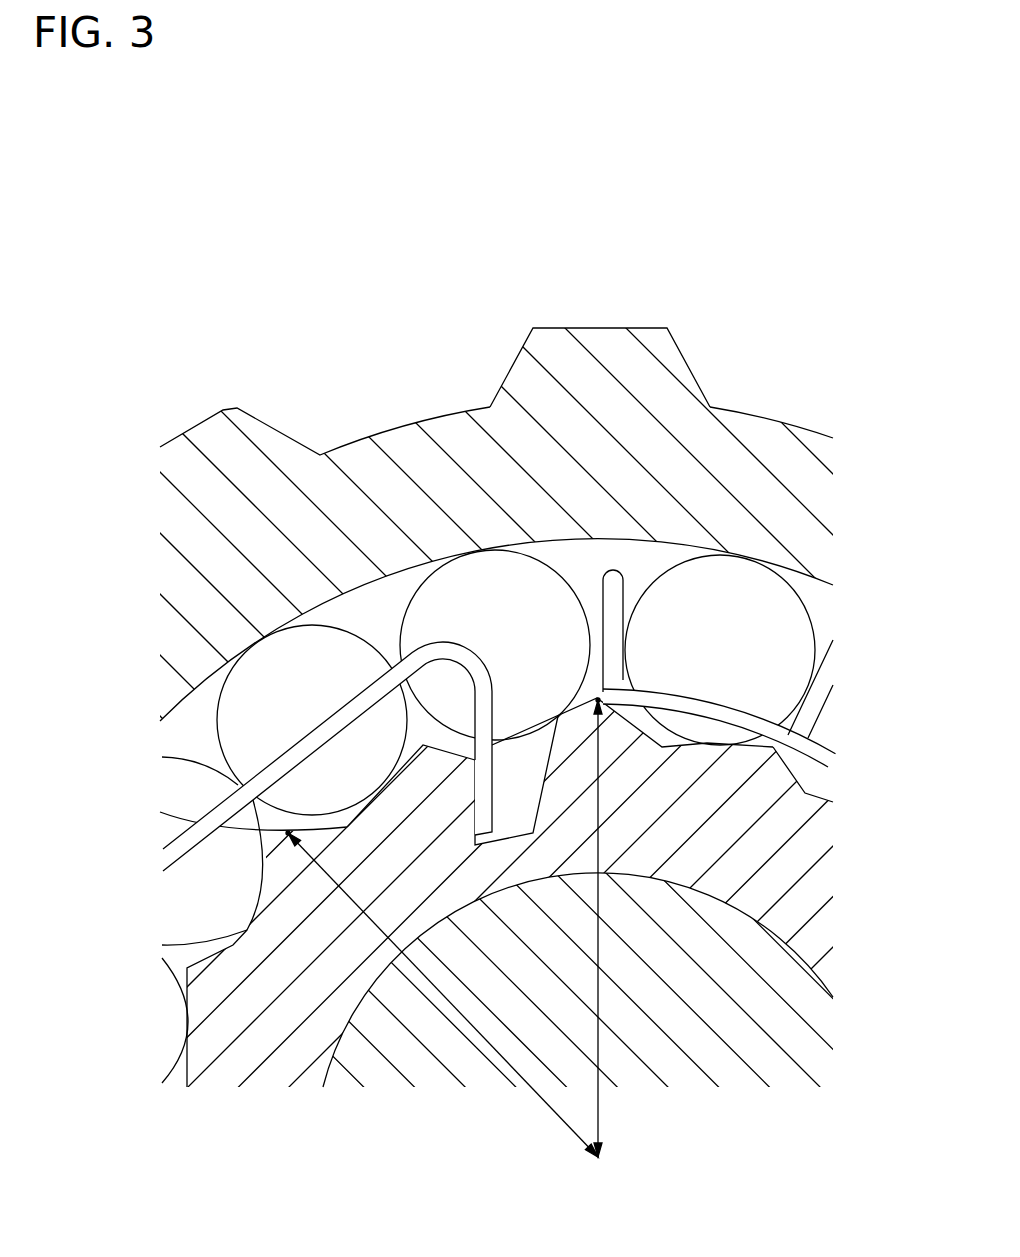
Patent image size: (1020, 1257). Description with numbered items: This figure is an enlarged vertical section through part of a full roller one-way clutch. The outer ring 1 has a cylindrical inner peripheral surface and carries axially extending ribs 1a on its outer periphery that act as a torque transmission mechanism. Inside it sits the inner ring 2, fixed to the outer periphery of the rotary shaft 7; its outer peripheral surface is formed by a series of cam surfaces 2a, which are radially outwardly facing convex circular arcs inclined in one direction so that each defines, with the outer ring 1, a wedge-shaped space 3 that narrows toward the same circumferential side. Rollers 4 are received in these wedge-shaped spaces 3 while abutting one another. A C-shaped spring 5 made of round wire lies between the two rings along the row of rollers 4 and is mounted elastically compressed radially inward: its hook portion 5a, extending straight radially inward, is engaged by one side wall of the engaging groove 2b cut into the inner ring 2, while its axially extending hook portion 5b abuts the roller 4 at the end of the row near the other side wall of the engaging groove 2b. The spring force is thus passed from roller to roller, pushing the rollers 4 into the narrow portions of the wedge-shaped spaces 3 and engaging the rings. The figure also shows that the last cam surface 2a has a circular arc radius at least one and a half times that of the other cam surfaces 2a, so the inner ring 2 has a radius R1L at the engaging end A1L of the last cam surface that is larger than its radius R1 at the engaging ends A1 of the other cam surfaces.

The outer ring 1 is at (762, 498).
The rib 1a is at (608, 387).
The inner ring 2 is at (768, 847).
The cam surface 2a is at (303, 608).
The engaging groove 2b is at (547, 783).
The wedge-shaped space 3 is at (298, 610).
The roller 4 is at (272, 685).
The C-shaped spring 5 is at (705, 703).
The hook portion 5a is at (480, 807).
The hook portion 5b is at (613, 560).
The rotary shaft 7 is at (738, 980).
The engaging end A1 is at (283, 833).
The engaging end of the last cam surface A1L is at (600, 698).
The radius R1 is at (443, 995).
The radius at the engaging end of the last cam surface R1L is at (626, 928).